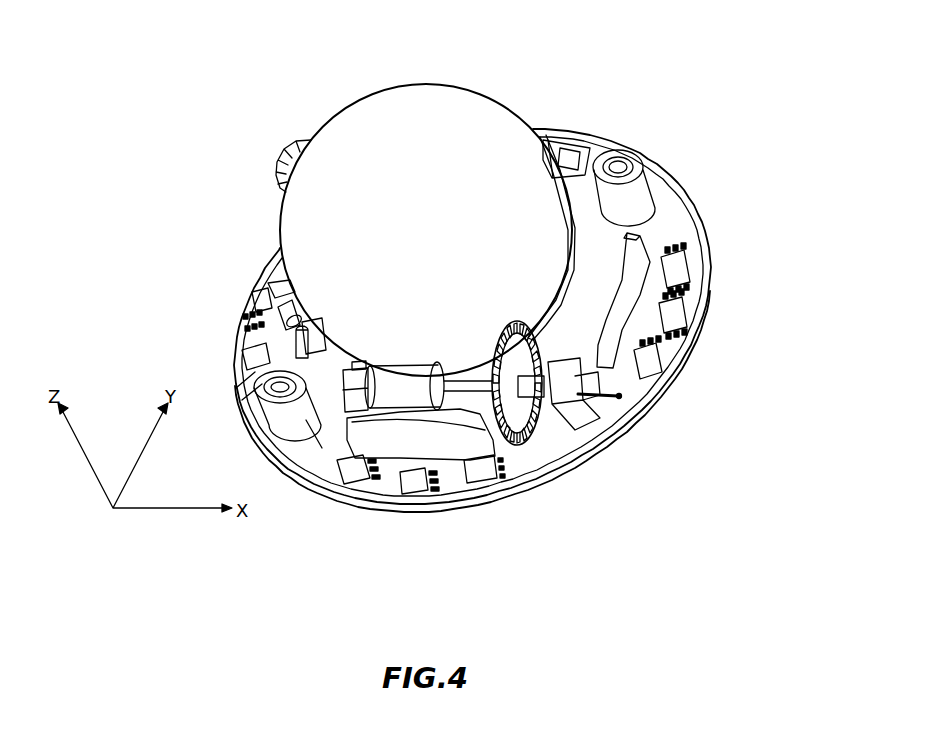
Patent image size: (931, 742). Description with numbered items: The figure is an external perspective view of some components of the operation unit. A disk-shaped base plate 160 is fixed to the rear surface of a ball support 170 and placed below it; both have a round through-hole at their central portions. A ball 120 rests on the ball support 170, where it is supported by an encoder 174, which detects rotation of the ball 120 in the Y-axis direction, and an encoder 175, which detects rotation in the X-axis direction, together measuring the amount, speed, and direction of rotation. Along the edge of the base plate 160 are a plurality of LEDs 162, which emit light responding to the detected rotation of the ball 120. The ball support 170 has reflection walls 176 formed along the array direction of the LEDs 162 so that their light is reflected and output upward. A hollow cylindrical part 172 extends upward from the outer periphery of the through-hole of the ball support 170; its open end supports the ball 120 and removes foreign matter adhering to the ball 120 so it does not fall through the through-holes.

The ball 120 is at (378, 107).
The base plate 160 is at (695, 282).
The LEDs 162 is at (688, 315).
The ball support 170 is at (540, 454).
The cylindrical part 172 is at (555, 302).
The encoder 174 is at (407, 388).
The encoder 175 is at (283, 291).
The reflection walls 176 is at (643, 268).